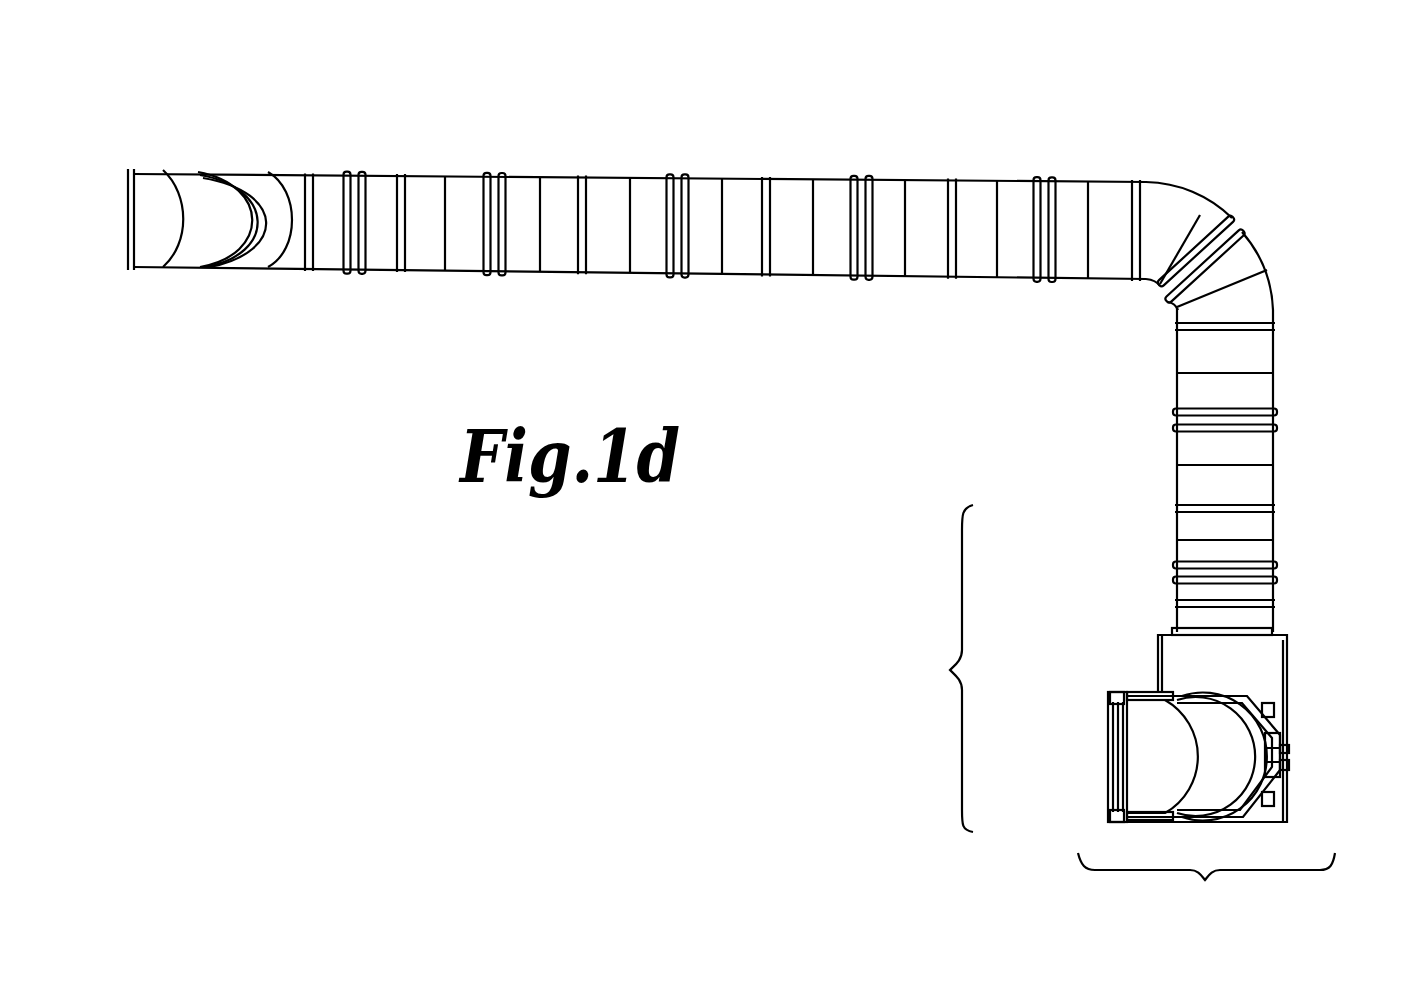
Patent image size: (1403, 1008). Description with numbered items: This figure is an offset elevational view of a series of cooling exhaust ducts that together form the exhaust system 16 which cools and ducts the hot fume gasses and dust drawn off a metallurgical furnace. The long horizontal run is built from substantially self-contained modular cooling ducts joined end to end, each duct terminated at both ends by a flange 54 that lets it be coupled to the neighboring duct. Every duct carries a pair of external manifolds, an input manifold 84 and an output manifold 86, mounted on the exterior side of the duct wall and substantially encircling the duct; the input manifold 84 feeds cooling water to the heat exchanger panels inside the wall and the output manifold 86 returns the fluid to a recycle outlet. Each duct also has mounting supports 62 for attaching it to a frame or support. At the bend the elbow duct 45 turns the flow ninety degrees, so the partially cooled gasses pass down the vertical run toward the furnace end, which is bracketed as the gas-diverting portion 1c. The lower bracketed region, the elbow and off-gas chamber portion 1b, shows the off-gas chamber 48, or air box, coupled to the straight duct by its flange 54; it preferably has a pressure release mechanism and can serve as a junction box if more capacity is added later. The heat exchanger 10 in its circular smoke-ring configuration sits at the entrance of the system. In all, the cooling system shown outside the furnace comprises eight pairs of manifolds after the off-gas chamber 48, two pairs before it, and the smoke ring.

The exhaust system 16 is at (1300, 115).
The elbow duct 45 is at (1200, 215).
The mounting supports 62 is at (540, 178).
The flange 54 is at (397, 178).
The input manifold 84 is at (362, 275).
The output manifold 86 is at (346, 274).
The off-gas chamber 48 is at (1277, 678).
The heat exchanger 10 is at (1097, 792).
The gas-diverting portion 1c is at (937, 668).
The elbow and off-gas chamber portion 1b is at (1206, 885).